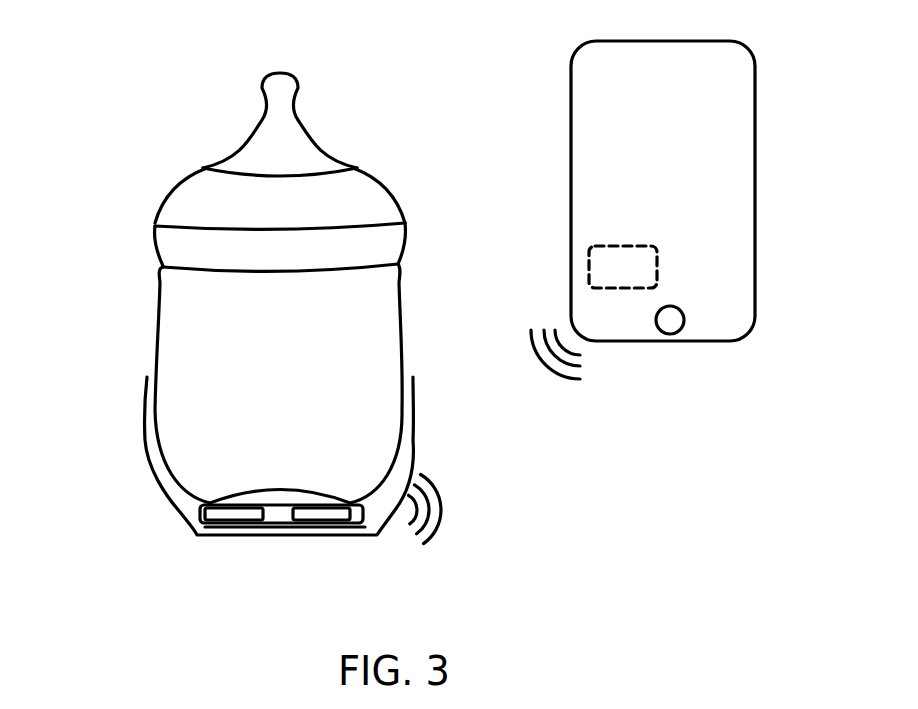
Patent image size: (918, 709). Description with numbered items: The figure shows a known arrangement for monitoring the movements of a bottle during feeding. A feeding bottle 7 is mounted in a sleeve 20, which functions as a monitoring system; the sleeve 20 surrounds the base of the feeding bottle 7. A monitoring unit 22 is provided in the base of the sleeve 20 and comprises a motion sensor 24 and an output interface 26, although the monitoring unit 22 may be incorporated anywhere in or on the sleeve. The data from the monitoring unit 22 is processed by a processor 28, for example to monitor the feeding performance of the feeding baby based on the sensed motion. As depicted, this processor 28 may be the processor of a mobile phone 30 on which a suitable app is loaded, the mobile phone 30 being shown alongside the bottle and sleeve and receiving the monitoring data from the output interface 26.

The feeding bottle 7 is at (160, 298).
The sleeve 20 is at (143, 430).
The monitoring unit 22 is at (200, 507).
The motion sensor 24 is at (237, 520).
The output interface 26 is at (317, 520).
The processor 28 is at (590, 280).
The mobile phone 30 is at (571, 207).